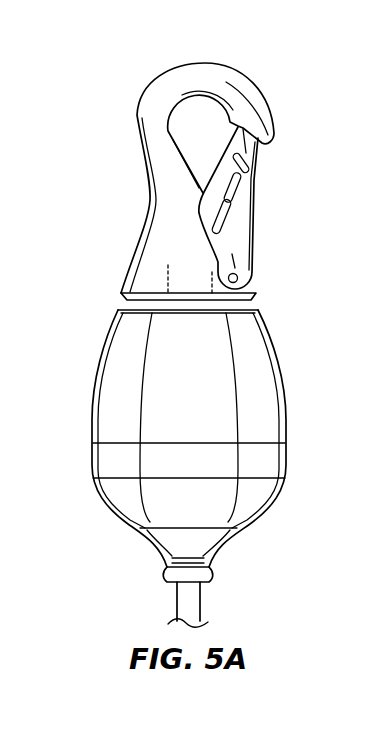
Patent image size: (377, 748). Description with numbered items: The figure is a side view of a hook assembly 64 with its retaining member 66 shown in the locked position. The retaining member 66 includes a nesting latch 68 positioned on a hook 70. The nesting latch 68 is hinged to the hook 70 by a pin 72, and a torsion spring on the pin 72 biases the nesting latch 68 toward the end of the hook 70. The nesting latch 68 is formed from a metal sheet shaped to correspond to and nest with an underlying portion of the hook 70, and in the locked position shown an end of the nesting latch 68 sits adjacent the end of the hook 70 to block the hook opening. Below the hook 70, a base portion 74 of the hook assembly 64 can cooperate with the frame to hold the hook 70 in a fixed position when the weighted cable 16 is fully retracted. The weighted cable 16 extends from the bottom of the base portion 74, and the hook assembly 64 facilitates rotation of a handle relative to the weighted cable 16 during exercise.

The hook assembly 64 is at (77, 143).
The hook 70 is at (228, 82).
The nesting latch 68 is at (256, 157).
The retaining member 66 is at (274, 213).
The pin 72 is at (243, 312).
The base portion 74 is at (253, 416).
The weighted cable 16 is at (197, 600).